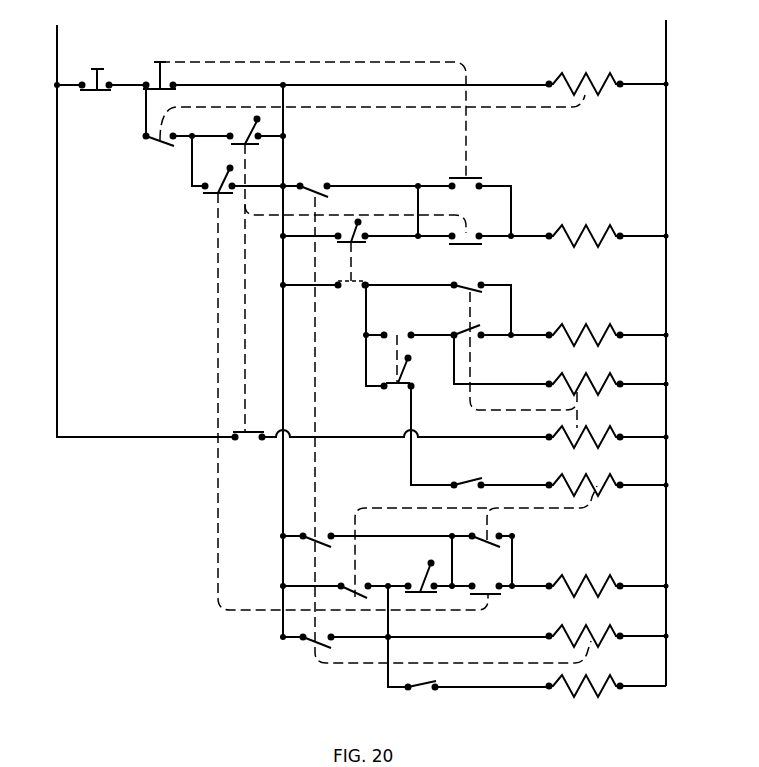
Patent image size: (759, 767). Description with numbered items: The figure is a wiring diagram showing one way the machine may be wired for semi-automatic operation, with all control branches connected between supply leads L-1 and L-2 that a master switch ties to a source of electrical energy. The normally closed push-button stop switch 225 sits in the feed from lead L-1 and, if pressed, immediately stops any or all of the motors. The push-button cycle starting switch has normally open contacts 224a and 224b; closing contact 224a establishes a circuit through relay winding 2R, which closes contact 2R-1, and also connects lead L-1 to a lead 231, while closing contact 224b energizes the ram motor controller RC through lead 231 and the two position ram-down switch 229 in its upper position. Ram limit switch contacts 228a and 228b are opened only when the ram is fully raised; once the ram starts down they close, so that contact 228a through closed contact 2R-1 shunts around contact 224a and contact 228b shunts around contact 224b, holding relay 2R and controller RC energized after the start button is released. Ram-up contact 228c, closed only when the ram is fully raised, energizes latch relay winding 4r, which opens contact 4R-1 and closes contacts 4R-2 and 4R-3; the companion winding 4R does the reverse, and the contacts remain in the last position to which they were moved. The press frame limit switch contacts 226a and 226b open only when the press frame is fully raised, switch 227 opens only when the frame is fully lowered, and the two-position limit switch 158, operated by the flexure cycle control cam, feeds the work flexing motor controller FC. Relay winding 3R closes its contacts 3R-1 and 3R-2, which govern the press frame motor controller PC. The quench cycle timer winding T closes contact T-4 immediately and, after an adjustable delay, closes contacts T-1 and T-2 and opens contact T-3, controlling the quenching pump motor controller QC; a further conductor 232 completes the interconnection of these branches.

The lead L-1 is at (55, 45).
The lead L-2 is at (661, 47).
The stop switch 225 is at (104, 84).
The cycle starting switch contact 224a is at (167, 66).
The relay contact 2R-1 is at (158, 146).
The limit switch contact 228a is at (243, 141).
The limit switch contact 226a is at (216, 194).
The timing relay contact T-1 is at (309, 184).
The cycle starting switch contact 224b is at (469, 178).
The relay winding 2R is at (572, 80).
The ram motor controller winding RC is at (568, 232).
The limit switch contact 228b is at (470, 244).
The two position switch 229 is at (353, 279).
The lead 231 is at (282, 283).
The work flexing motor controller winding FC is at (568, 331).
The latch relay contact 4R-1 is at (456, 298).
The latch relay contact 4R-2 is at (471, 334).
The latch relay winding 4R is at (604, 380).
The limit switch 158 is at (395, 383).
The latch relay winding 4r is at (606, 433).
The limit switch contact 228c is at (250, 440).
The latch relay contact 4R-3 is at (456, 481).
The relay winding 3R is at (600, 484).
The relay contact 3R-1 is at (494, 542).
The timing relay contact T-2 is at (310, 543).
The limit switch 227 is at (412, 585).
The press frame motor controller winding PC is at (568, 582).
The relay contact 3R-2 is at (357, 597).
The limit switch contact 226b is at (488, 594).
The conductor 232 is at (390, 625).
The timing relay winding T is at (606, 634).
The timing relay contact T-4 is at (311, 644).
The timing relay contact T-3 is at (418, 690).
The quenching pump motor controller winding QC is at (582, 686).